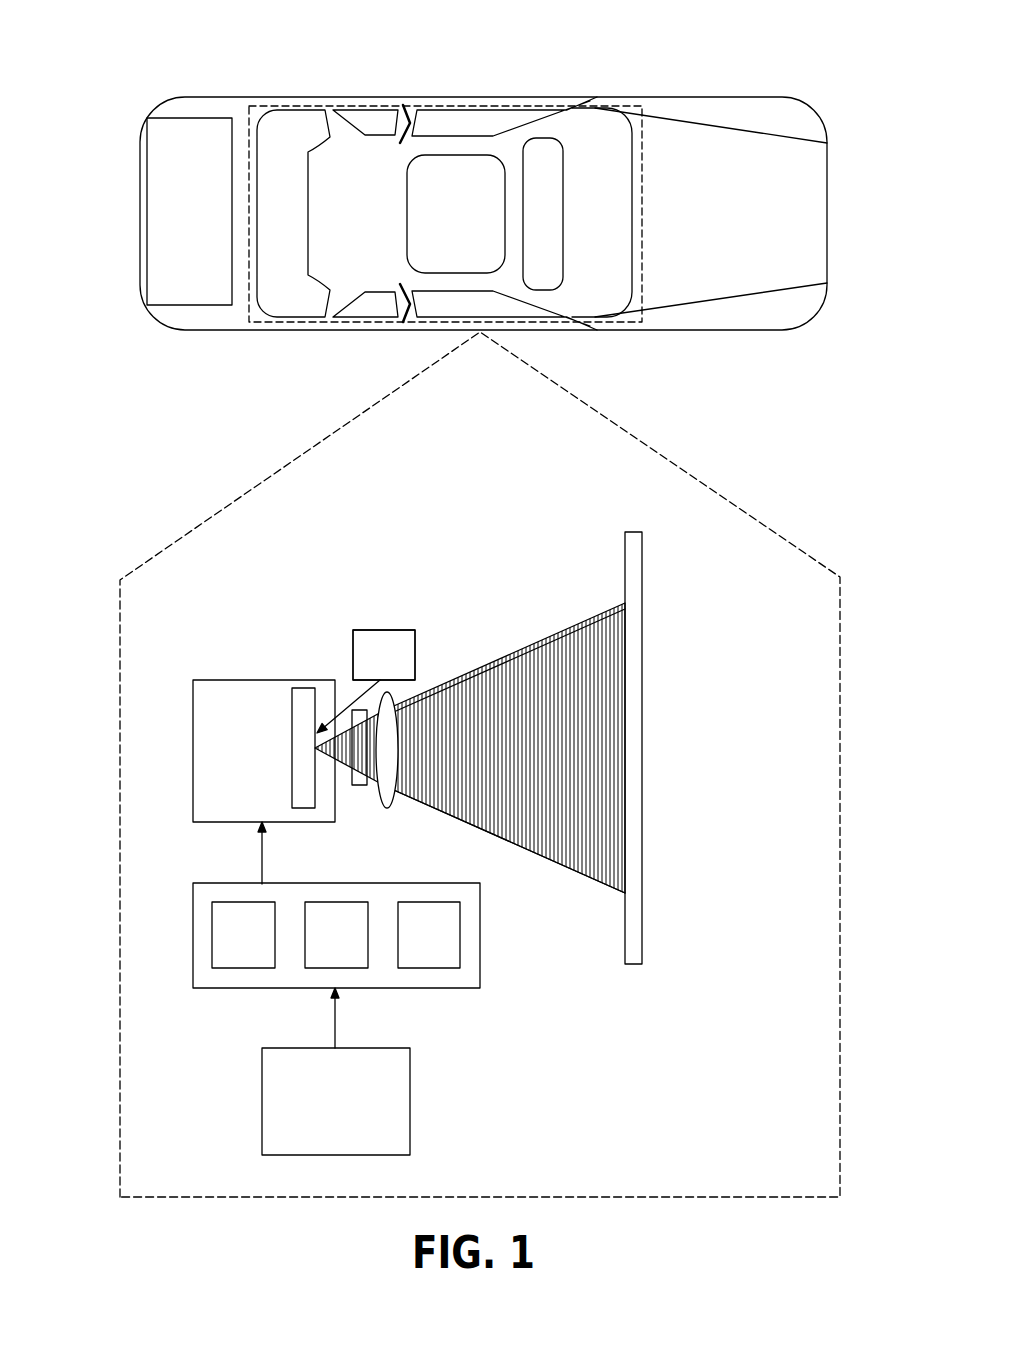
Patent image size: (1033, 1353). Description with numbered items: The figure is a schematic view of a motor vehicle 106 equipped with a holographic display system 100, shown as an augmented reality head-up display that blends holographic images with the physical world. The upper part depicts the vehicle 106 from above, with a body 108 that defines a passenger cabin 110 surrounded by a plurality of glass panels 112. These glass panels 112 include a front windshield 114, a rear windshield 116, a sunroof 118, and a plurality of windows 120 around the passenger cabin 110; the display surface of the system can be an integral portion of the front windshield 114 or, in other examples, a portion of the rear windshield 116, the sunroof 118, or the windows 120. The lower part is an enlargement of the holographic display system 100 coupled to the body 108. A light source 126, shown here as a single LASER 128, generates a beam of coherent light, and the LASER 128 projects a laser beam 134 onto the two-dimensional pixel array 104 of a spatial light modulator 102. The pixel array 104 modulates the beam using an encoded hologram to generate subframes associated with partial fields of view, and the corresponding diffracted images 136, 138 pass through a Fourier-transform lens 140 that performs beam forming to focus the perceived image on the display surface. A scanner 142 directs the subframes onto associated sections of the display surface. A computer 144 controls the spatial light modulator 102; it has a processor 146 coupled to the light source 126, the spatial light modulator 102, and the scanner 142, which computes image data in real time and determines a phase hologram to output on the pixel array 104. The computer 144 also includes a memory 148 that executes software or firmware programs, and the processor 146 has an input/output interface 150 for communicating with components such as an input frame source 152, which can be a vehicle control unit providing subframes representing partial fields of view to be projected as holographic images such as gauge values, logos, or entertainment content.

The holographic display system 100 is at (95, 565).
The spatial light modulator 102 is at (193, 710).
The two-dimensional pixel array 104 is at (292, 710).
The motor vehicle 106 is at (140, 105).
The body 108 is at (140, 203).
The passenger cabin 110 is at (643, 267).
The glass panels 112 is at (455, 256).
The front windshield 114 is at (633, 198).
The rear windshield 116 is at (257, 283).
The sunroof 118 is at (503, 190).
The windows 120 is at (447, 120).
The light source 126 is at (385, 628).
The LASER 128 is at (375, 622).
The laser beam 134 is at (351, 704).
The diffracted image 136 is at (543, 642).
The diffracted image 138 is at (606, 885).
The Fourier-transform lens 140 is at (397, 707).
The scanner 142 is at (357, 787).
The computer 144 is at (192, 925).
The processor 146 is at (260, 948).
The memory 148 is at (354, 948).
The input/output interface 150 is at (445, 948).
The input frame source 152 is at (260, 1093).